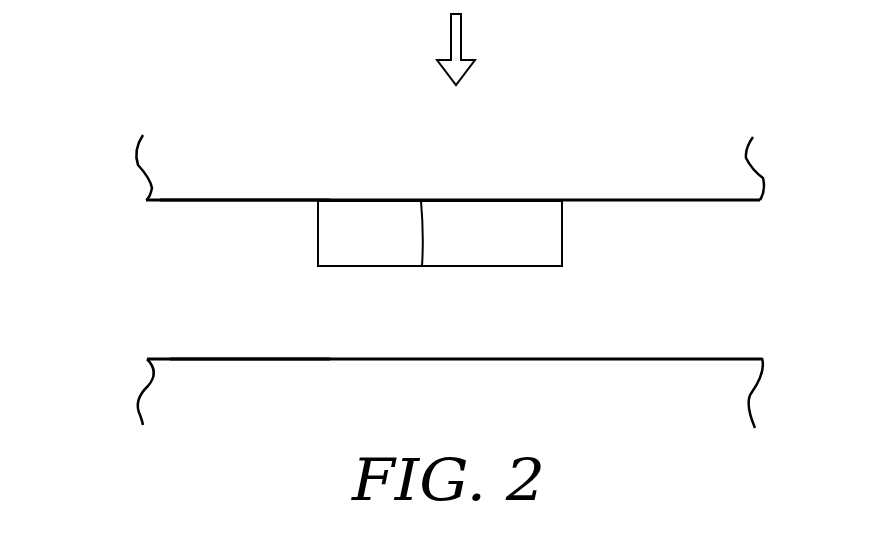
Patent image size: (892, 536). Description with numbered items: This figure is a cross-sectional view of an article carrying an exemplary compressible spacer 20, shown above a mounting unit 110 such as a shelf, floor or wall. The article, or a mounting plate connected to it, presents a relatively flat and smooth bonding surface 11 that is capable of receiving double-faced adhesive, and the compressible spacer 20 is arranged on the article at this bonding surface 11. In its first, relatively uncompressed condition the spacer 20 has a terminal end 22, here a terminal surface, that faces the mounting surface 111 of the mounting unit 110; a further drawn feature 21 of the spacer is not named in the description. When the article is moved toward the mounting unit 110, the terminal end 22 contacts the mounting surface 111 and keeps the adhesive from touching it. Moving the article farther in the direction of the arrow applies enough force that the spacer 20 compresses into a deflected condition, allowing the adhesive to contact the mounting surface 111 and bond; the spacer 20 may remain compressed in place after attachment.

The bonding surface 11 is at (180, 203).
The compressible spacer 20 is at (335, 252).
The boundary between regions 21 is at (422, 266).
The terminal end 22 is at (502, 266).
The mounting unit 110 is at (157, 397).
The mounting surface 111 is at (194, 357).